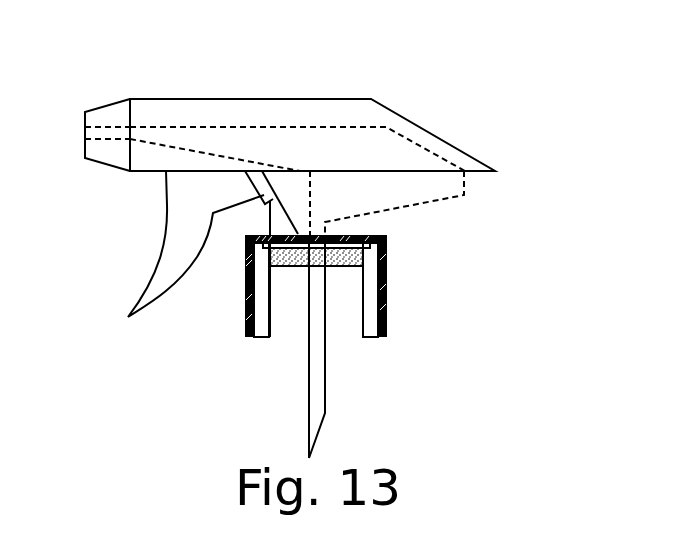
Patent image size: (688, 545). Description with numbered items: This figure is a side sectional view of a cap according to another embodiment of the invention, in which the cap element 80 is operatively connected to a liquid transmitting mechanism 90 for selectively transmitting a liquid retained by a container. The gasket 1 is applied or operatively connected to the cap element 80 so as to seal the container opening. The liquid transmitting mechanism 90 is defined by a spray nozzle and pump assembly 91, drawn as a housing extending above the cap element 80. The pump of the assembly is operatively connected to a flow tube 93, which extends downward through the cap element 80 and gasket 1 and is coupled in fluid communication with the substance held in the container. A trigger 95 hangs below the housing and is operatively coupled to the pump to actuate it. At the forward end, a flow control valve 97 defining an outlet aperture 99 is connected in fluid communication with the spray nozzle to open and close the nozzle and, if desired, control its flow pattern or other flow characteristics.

The gasket 1 is at (362, 258).
The cap element 80 is at (387, 287).
The liquid transmitting mechanism 90 is at (233, 99).
The spray nozzle and pump assembly 91 is at (420, 145).
The flow tube 93 is at (313, 380).
The trigger 95 is at (150, 277).
The flow control valve 97 is at (98, 165).
The outlet aperture 99 is at (85, 135).